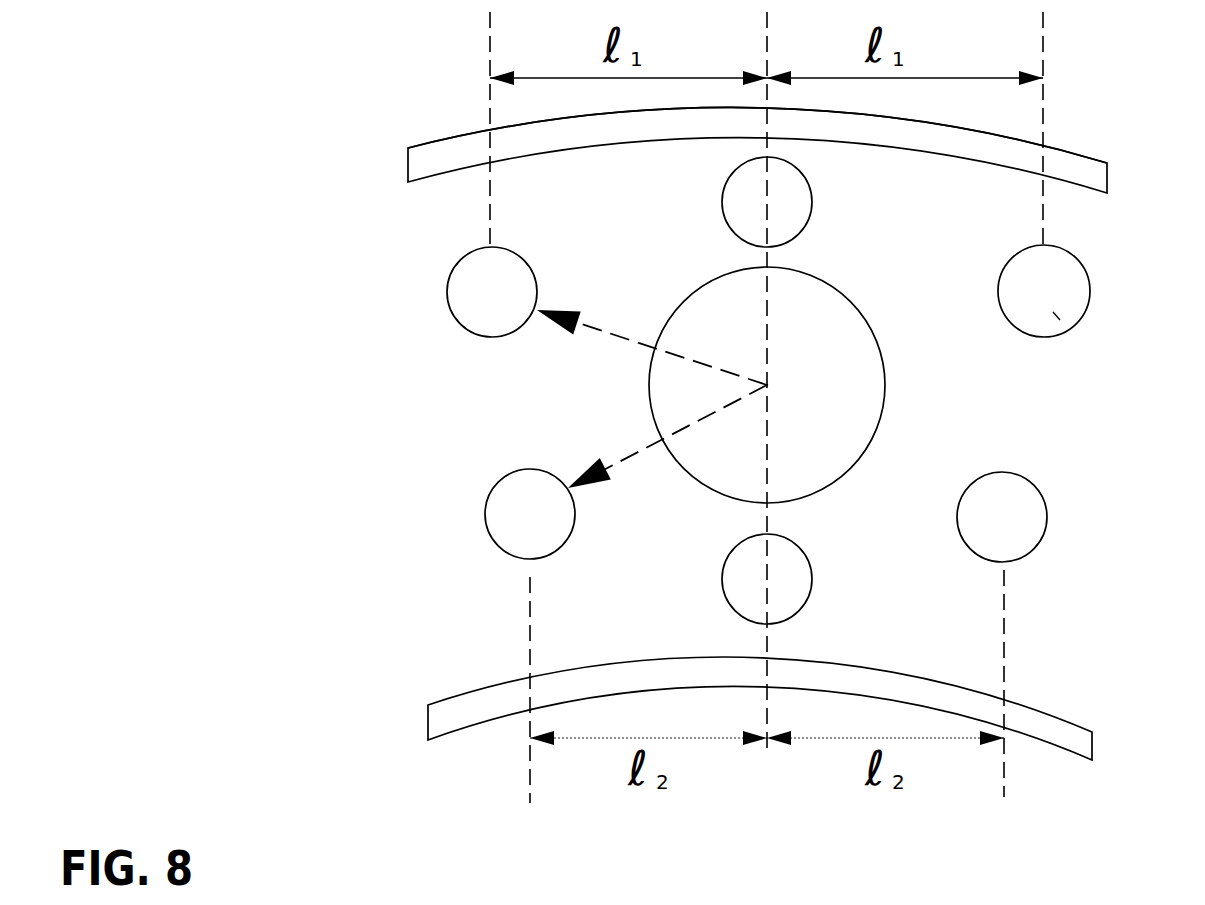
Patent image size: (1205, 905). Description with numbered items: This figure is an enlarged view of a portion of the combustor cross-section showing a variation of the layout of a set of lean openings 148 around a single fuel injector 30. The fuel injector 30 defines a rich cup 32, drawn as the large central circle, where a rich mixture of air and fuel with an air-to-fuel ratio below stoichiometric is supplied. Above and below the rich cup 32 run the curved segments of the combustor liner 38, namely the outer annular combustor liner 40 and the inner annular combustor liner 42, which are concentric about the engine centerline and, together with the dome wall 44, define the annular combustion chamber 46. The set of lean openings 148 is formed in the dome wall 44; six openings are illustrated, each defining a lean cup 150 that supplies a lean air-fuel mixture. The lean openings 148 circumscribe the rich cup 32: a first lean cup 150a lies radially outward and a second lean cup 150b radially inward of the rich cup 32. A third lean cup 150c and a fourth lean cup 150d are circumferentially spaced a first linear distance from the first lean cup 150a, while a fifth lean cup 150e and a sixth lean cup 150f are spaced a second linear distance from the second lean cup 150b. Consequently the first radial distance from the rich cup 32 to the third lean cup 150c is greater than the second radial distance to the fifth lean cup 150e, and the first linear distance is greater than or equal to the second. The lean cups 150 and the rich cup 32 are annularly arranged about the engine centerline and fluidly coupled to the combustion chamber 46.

The fuel injector 30 is at (885, 402).
The rich cup 32 is at (822, 409).
The combustor liner 38 is at (1058, 137).
The outer annular combustor liner 40 is at (1085, 157).
The inner annular combustor liner 42 is at (1053, 748).
The dome wall 44 is at (589, 391).
The combustion chamber 46 is at (1095, 217).
The set of lean openings 148 is at (1048, 556).
The lean cup 150 is at (1053, 312).
The first lean cup 150a is at (745, 221).
The second lean cup 150b is at (745, 595).
The third lean cup 150c is at (470, 302).
The fourth lean cup 150d is at (1022, 307).
The fifth lean cup 150e is at (508, 524).
The sixth lean cup 150f is at (980, 533).